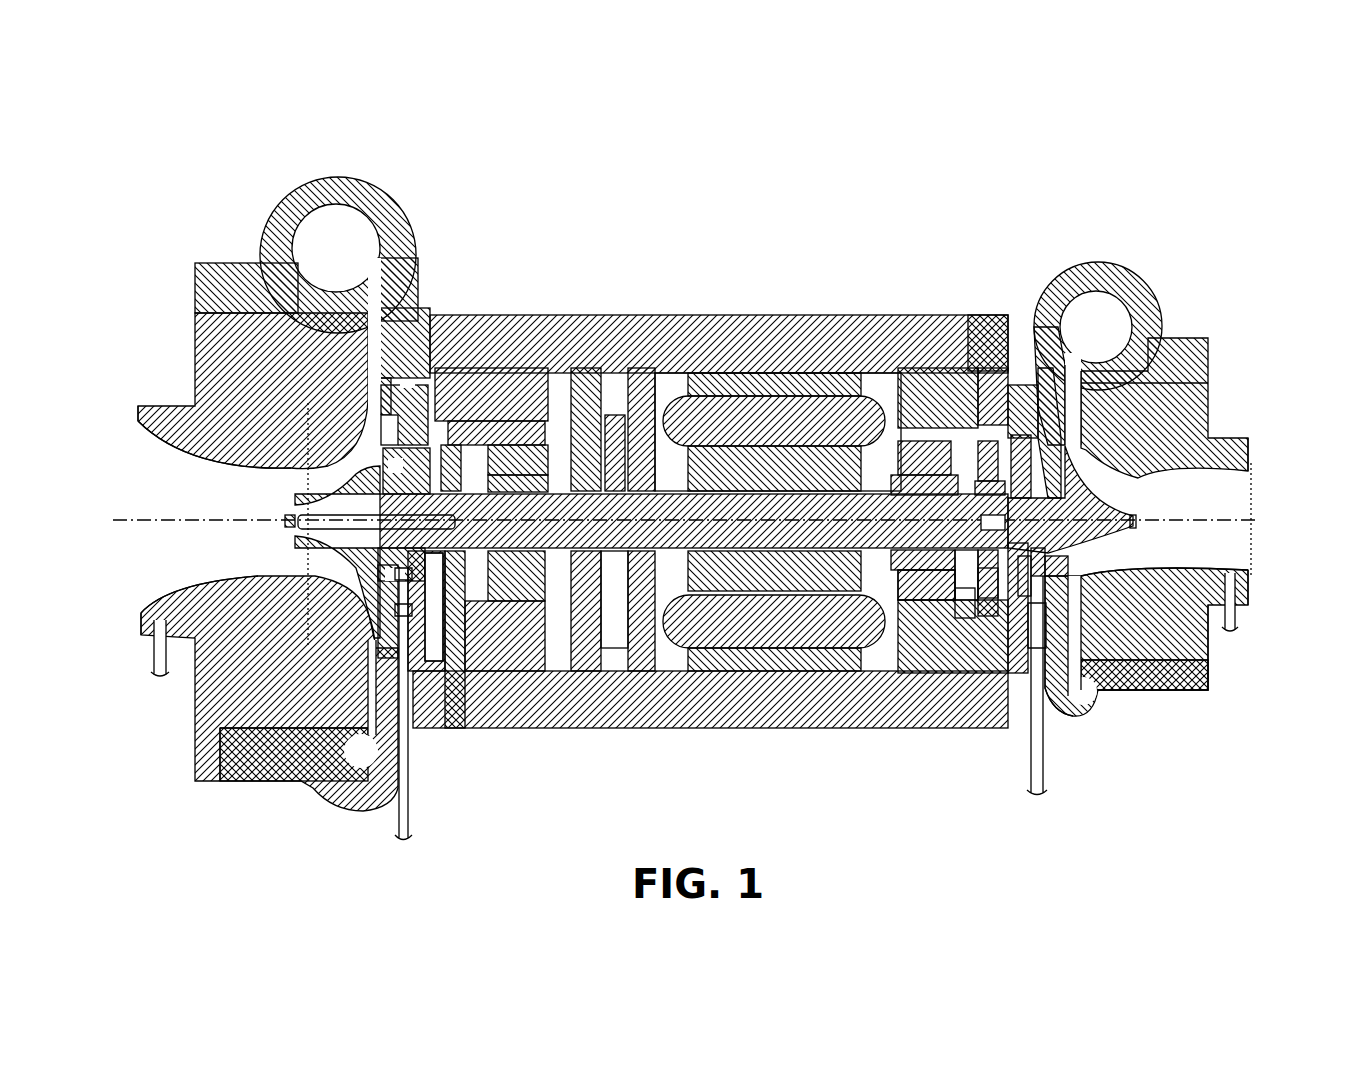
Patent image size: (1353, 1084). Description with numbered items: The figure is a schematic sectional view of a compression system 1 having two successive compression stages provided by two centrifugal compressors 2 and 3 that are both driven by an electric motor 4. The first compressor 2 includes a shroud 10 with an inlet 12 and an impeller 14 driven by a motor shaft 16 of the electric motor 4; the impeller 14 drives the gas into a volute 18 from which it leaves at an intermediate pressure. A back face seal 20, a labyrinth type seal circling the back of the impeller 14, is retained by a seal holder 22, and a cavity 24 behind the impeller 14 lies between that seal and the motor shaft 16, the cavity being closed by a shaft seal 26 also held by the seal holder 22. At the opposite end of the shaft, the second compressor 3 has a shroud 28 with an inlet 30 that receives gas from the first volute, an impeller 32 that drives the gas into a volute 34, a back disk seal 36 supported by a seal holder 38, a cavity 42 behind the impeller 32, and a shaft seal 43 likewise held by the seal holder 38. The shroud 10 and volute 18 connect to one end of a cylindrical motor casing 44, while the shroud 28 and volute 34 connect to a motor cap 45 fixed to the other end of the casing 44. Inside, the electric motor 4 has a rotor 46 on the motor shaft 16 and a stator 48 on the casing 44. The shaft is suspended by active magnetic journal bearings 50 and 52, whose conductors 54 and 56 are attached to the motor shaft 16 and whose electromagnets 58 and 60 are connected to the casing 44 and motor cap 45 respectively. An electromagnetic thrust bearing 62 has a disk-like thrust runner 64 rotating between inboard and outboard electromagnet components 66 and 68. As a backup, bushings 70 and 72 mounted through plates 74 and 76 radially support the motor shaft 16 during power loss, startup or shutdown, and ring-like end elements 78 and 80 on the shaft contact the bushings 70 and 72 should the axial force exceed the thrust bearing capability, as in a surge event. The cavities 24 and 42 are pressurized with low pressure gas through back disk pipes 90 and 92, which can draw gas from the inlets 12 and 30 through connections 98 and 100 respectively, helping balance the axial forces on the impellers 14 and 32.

The compression system 1 is at (787, 228).
The compressor 2 is at (155, 720).
The compressor 3 is at (1210, 665).
The electric motor 4 is at (745, 678).
The shroud 10 is at (195, 790).
The inlet 12 is at (135, 445).
The impeller 14 is at (295, 550).
The motor shaft 16 is at (870, 545).
The volute 18 is at (350, 195).
The back face seal 20 is at (440, 355).
The seal holder 22 is at (390, 437).
The cavity 24 is at (300, 488).
The shaft seal 26 is at (378, 560).
The shroud 28 is at (1200, 365).
The inlet 30 is at (1235, 480).
The impeller 32 is at (1115, 545).
The volute 34 is at (1080, 706).
The back disk seal 36 is at (1037, 470).
The seal holder 38 is at (980, 470).
The cavity 42 is at (1052, 540).
The shaft seal 43 is at (1018, 575).
The cylindrical motor casing 44 is at (958, 562).
The motor cap 45 is at (978, 580).
The rotor 46 is at (720, 570).
The stator 48 is at (808, 618).
The journal bearing 50 is at (548, 432).
The journal bearing 52 is at (880, 420).
The conductor 54 is at (500, 560).
The conductor 56 is at (910, 562).
The electromagnet 58 is at (527, 440).
The electromagnet 60 is at (955, 450).
The electromagnetic thrust bearing 62 is at (660, 378).
The disk-like thrust runner 64 is at (612, 407).
The inboard component 66 is at (620, 600).
The outboard component 68 is at (575, 595).
The bushing 70 is at (430, 545).
The bushing 72 is at (1110, 513).
The plate 74 is at (452, 555).
The plate 76 is at (955, 585).
The end element 78 is at (475, 467).
The end element 80 is at (925, 435).
The back disk pipe 90 is at (393, 822).
The back disk pipe 92 is at (1033, 760).
The connection 98 is at (155, 645).
The connection 100 is at (1220, 605).